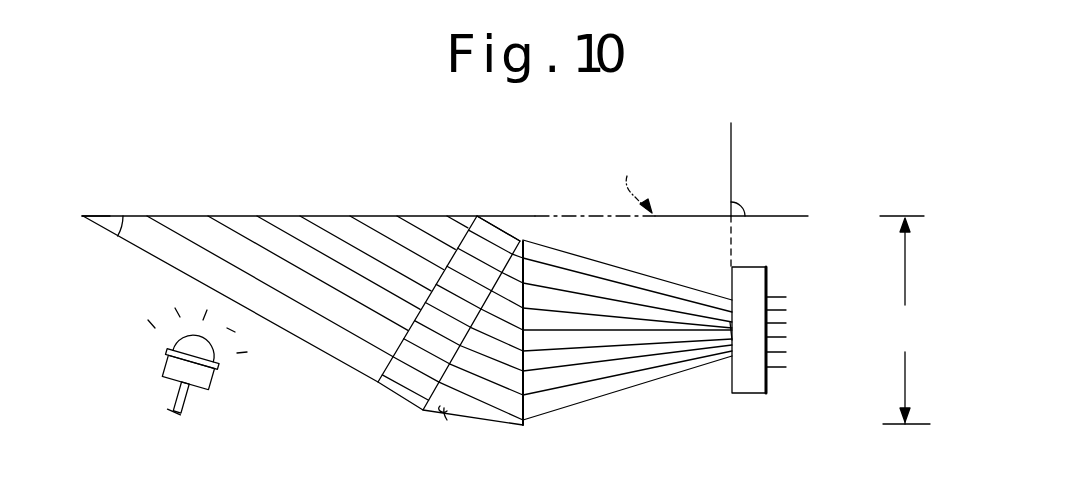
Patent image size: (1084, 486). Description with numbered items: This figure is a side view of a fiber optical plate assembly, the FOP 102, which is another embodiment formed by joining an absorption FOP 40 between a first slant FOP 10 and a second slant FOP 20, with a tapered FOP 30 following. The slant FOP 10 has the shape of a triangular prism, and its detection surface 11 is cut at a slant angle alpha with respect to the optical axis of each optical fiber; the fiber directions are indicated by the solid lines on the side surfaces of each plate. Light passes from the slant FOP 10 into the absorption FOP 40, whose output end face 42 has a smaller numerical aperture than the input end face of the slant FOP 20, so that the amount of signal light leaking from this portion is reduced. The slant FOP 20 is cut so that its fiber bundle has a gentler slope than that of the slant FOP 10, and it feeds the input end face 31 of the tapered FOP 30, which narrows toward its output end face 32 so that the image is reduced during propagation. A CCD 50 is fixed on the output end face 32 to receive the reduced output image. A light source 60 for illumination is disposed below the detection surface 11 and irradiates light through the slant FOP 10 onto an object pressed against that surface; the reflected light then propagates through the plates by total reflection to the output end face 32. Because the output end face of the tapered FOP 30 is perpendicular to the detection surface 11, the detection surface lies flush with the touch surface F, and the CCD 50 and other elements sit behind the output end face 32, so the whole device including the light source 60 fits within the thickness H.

The FOP 102 is at (233, 186).
The slant FOP 10 is at (348, 220).
The detection surface 11 is at (121, 214).
The slant FOP 20 is at (493, 405).
The tapered FOP 30 is at (630, 378).
The input end face 31 is at (525, 387).
The output end face 32 is at (728, 347).
The absorption FOP 40 is at (403, 388).
The output end face 42 is at (503, 247).
The CCD 50 is at (755, 385).
The light source 60 is at (139, 347).